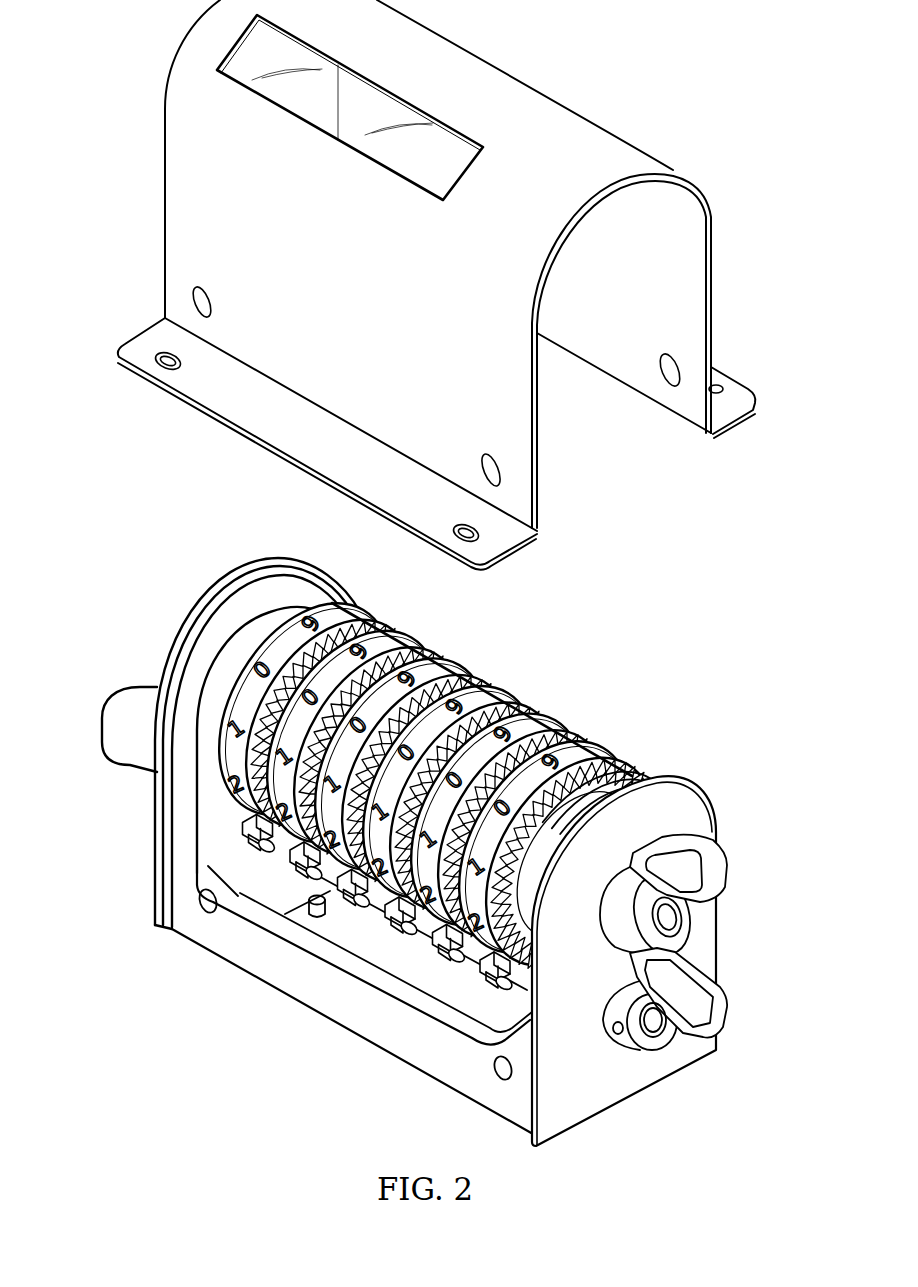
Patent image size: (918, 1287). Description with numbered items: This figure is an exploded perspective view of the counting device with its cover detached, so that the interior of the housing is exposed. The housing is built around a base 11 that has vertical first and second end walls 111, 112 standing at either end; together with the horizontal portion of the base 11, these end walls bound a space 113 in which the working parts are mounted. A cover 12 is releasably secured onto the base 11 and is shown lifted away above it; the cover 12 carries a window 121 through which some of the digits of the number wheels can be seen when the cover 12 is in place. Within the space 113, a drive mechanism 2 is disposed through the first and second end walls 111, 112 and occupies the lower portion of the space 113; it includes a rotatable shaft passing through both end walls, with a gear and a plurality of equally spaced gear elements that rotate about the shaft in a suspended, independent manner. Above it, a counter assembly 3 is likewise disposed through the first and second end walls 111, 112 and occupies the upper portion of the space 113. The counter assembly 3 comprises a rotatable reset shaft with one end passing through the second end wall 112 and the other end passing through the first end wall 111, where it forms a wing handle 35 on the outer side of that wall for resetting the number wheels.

The base 11 is at (637, 1102).
The first end wall 111 is at (680, 1048).
The second end wall 112 is at (160, 848).
The space 113 is at (380, 935).
The cover 12 is at (567, 140).
The window 121 is at (437, 175).
The drive mechanism 2 is at (473, 963).
The counter assembly 3 is at (558, 715).
The wing handle 35 is at (692, 878).